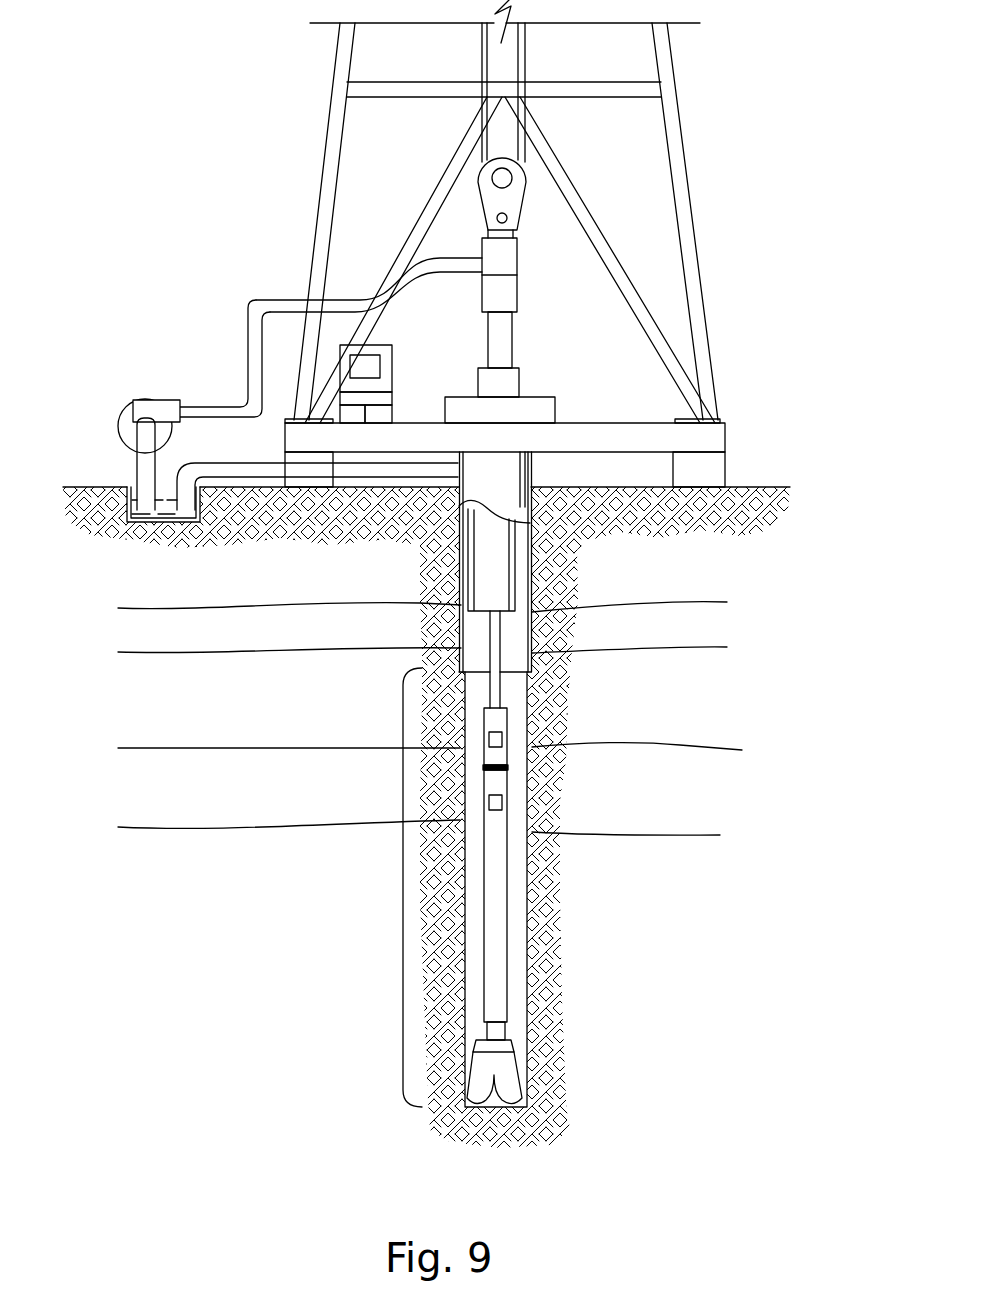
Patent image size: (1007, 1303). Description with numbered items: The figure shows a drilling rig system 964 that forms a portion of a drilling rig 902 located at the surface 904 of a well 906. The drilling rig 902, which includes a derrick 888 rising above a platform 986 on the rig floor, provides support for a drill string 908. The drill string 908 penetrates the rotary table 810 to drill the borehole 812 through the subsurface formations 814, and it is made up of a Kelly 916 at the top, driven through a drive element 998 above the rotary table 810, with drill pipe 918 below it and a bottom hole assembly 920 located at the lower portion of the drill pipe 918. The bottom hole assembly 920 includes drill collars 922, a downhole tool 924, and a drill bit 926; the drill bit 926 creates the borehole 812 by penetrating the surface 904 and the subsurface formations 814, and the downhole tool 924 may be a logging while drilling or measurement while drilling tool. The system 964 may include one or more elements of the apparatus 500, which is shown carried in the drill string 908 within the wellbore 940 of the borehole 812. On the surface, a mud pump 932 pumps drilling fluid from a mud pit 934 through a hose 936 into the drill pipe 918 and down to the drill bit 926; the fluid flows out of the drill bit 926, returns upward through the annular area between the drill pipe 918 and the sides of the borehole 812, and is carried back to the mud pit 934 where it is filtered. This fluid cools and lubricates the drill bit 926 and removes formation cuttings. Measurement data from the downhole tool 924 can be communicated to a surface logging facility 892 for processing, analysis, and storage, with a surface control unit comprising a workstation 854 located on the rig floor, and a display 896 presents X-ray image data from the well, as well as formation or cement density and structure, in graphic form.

The drilling rig system 964 is at (196, 110).
The derrick 888 is at (677, 112).
The drilling rig 902 is at (700, 211).
The hose 936 is at (250, 350).
The mud pump 932 is at (150, 400).
The mud pit 934 is at (147, 517).
The surface logging facility 892 is at (385, 342).
The workstation 854 is at (393, 355).
The display 896 is at (380, 367).
The rotary table 810 is at (462, 397).
The Kelly 916 is at (512, 330).
The drive 998 is at (519, 385).
The platform 986 is at (726, 425).
The well 906 is at (541, 485).
The surface 904 is at (746, 487).
The drill collars 922 is at (514, 570).
The drill pipe 918 is at (496, 648).
The wellbore 940 is at (522, 698).
The apparatus 500 is at (509, 721).
The subsurface formations 814 is at (100, 605).
The bottom hole assembly 920 is at (372, 887).
The drill string 908 is at (512, 891).
The borehole 812 is at (525, 968).
The downhole tool 924 is at (495, 1003).
The drill bit 926 is at (502, 1062).